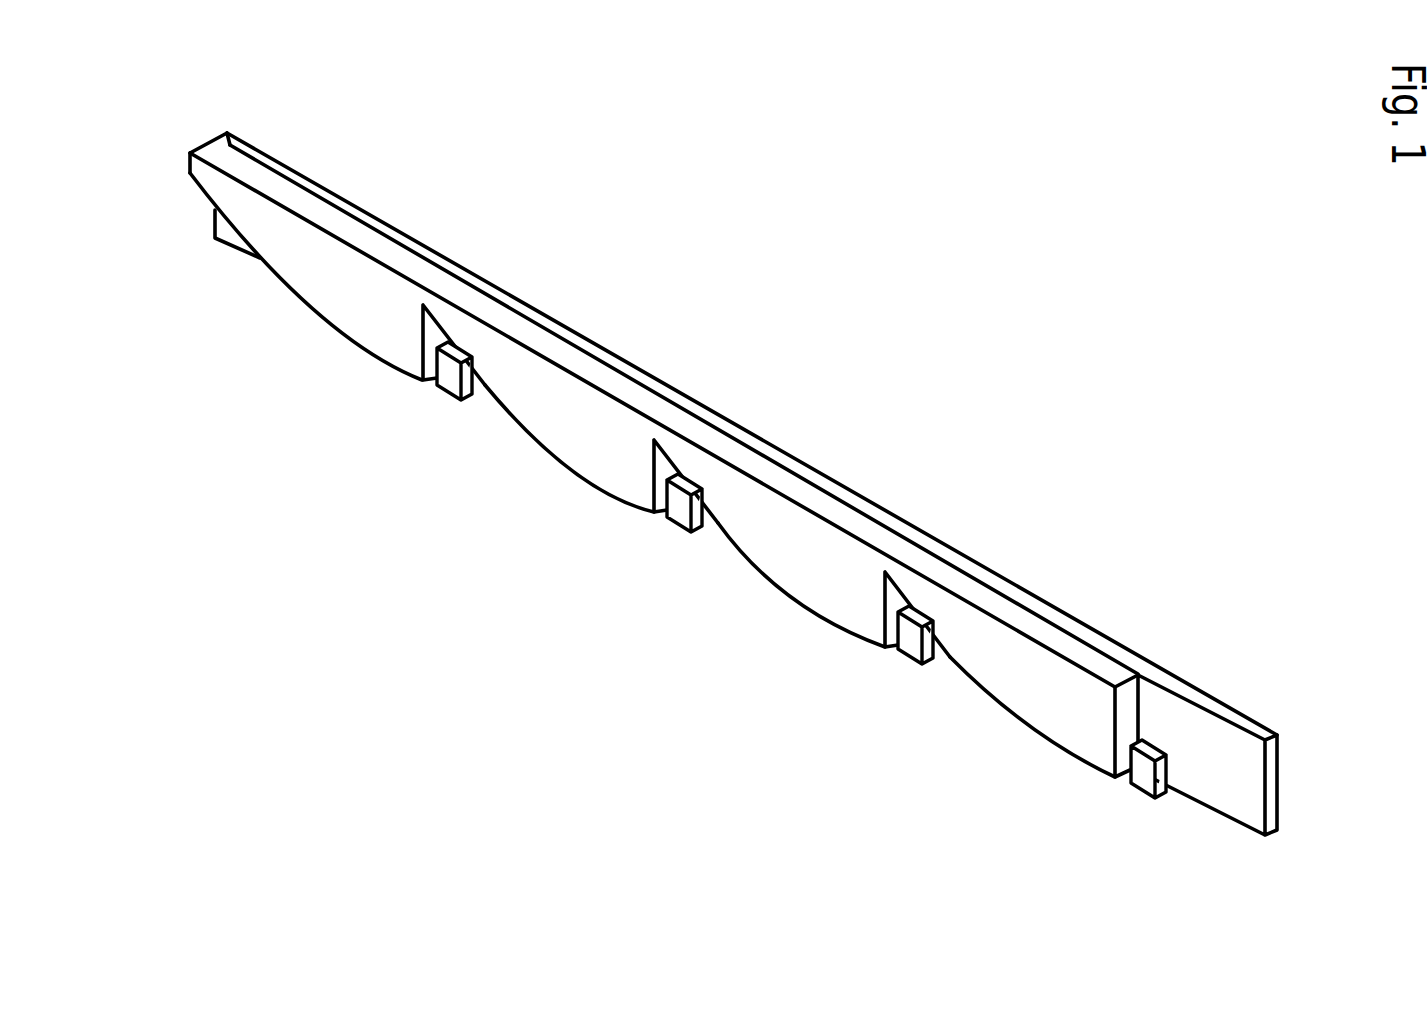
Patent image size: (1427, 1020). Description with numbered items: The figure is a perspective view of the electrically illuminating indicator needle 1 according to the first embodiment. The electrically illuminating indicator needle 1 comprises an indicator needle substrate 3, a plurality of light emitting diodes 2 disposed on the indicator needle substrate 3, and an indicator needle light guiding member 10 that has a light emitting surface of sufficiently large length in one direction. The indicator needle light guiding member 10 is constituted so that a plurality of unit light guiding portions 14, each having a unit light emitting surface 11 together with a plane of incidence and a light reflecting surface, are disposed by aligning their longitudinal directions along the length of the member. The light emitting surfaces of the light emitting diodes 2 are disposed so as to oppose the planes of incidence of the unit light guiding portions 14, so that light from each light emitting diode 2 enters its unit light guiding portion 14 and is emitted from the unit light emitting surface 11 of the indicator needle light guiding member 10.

The electrically illuminating indicator needle 1 is at (1001, 257).
The indicator needle light guiding member 10 is at (699, 455).
The unit light emitting surface 11 is at (233, 170).
The unit light guiding portion 14 is at (382, 307).
The light emitting diode 2 is at (450, 387).
The indicator needle substrate 3 is at (1215, 707).